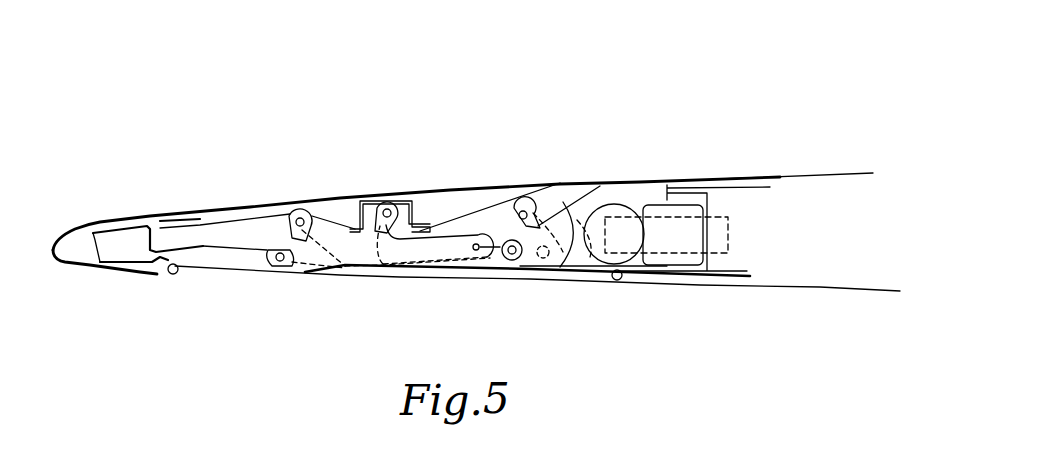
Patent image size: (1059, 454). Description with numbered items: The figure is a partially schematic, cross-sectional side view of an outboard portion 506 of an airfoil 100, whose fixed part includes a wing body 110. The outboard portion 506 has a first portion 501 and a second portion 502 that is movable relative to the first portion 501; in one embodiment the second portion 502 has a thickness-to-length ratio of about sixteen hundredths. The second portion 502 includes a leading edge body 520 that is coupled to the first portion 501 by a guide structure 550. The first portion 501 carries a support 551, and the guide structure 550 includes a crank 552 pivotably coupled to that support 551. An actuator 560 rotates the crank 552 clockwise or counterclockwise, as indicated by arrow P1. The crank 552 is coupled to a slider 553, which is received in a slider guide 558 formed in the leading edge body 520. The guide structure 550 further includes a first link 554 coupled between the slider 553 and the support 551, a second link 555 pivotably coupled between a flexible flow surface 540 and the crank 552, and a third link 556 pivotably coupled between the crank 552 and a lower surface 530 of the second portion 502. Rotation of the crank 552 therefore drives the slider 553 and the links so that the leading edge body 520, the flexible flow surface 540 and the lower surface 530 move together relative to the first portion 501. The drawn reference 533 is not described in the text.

The airfoil 100 is at (670, 52).
The wing body 110 is at (808, 272).
The first portion 501 is at (780, 175).
The second portion 502 is at (203, 170).
The outboard portion 506 is at (677, 138).
The leading edge body 520 is at (58, 266).
The lower surface 530 is at (373, 293).
The panel edge 533 is at (683, 287).
The flexible flow surface 540 is at (306, 211).
The guide structure 550 is at (298, 290).
The support 551 is at (637, 188).
The crank 552 is at (558, 200).
The slider 553 is at (245, 230).
The first link 554 is at (380, 258).
The second link 555 is at (437, 204).
The third link 556 is at (548, 262).
The slider guide 558 is at (138, 222).
The actuator 560 is at (728, 235).
The arrow P1 is at (580, 195).